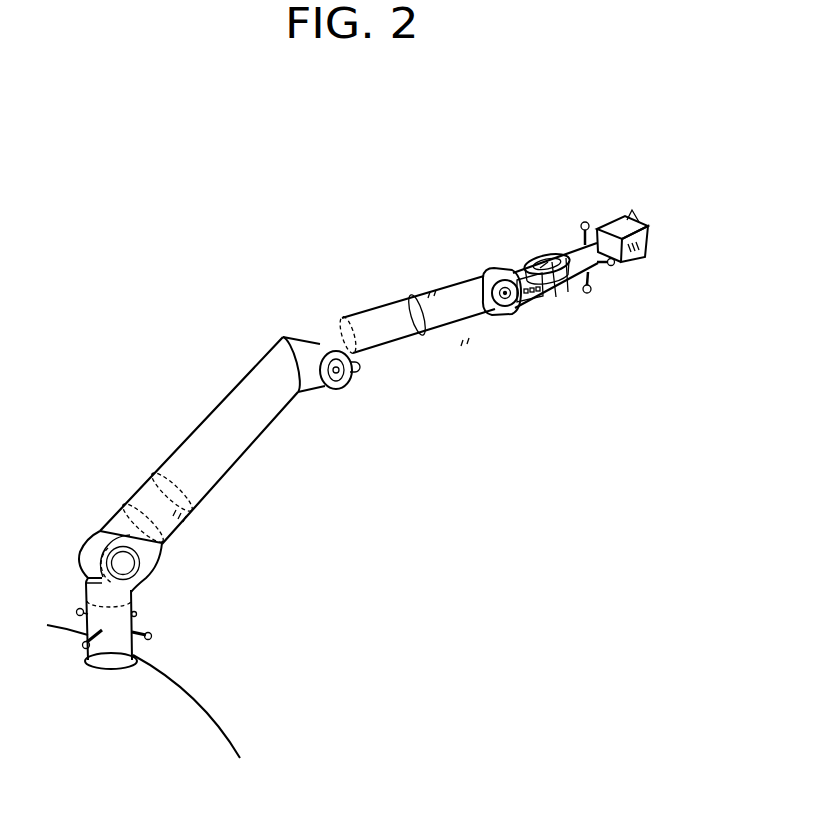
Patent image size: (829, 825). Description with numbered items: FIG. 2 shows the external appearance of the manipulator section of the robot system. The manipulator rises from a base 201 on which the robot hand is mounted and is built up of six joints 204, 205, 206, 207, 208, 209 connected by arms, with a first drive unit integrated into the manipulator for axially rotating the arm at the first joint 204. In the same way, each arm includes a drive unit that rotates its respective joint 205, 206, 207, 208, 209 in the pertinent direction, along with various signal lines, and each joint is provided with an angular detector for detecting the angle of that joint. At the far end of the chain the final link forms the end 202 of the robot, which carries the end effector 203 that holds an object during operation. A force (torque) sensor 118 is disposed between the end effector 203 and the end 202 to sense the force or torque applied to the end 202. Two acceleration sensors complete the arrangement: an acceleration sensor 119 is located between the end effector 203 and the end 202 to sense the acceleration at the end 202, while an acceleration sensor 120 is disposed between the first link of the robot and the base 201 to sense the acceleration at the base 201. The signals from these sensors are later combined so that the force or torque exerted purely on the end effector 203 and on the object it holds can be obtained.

The force (torque) sensor 118 is at (605, 266).
The acceleration sensor 119 is at (580, 229).
The acceleration sensor 120 is at (142, 637).
The base 201 is at (215, 745).
The end 202 is at (563, 251).
The end effector 203 is at (622, 238).
The joint 204 is at (133, 607).
The joint 205 is at (132, 569).
The joint 206 is at (349, 383).
The joint 207 is at (425, 337).
The joint 208 is at (508, 316).
The joint 209 is at (555, 293).